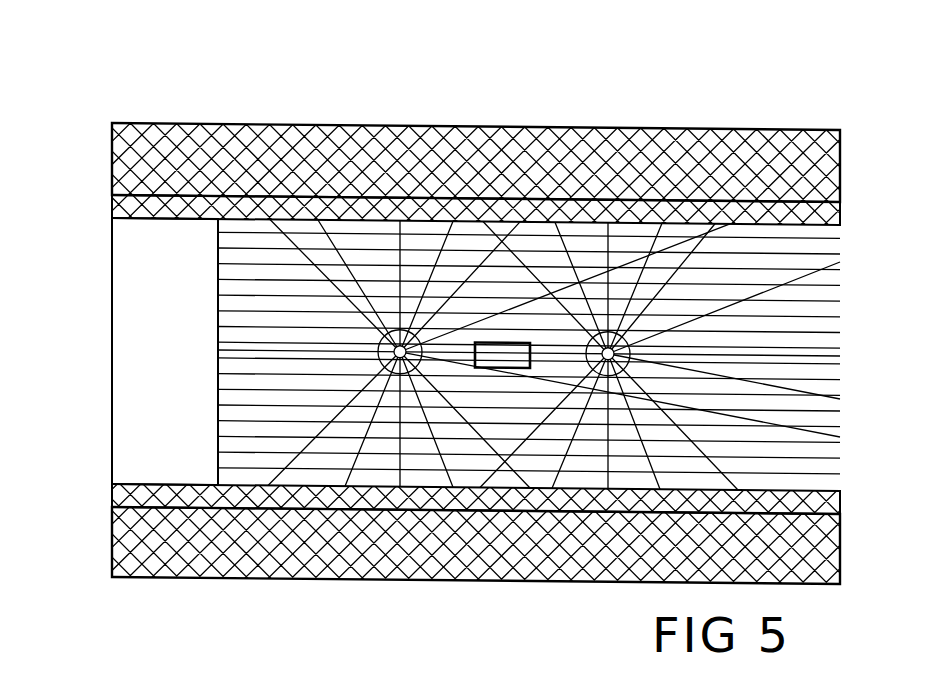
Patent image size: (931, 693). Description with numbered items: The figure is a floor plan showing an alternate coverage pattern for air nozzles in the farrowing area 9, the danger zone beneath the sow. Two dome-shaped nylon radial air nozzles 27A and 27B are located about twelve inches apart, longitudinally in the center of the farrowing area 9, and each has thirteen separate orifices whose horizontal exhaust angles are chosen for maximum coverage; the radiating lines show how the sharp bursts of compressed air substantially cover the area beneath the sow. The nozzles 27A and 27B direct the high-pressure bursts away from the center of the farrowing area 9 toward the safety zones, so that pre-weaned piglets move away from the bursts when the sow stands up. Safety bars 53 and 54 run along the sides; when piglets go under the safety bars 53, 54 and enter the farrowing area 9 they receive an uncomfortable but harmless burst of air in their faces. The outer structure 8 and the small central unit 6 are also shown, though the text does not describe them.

The outer wall 8 is at (441, 126).
The safety bar 54 is at (218, 194).
The safety bar 53 is at (152, 508).
The farrowing area 9 is at (220, 238).
The radial air nozzle 27A is at (398, 337).
The radial air nozzle 27B is at (608, 337).
The control unit 6 is at (507, 345).